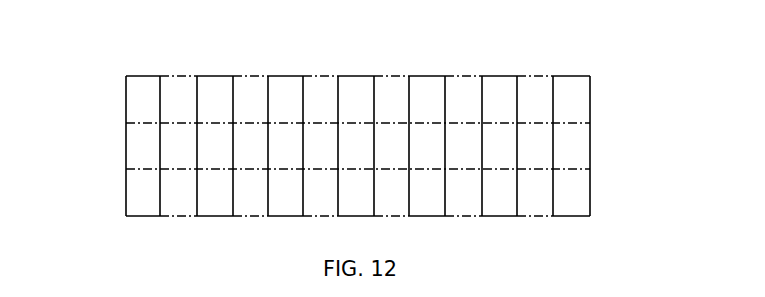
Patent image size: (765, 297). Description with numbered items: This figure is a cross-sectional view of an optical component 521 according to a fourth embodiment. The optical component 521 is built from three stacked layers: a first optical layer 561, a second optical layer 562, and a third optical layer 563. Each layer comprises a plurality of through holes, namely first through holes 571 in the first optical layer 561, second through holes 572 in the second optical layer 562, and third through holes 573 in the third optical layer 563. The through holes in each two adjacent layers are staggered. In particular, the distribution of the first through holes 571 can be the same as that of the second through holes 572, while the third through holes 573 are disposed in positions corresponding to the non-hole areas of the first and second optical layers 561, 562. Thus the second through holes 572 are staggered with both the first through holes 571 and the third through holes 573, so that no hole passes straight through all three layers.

The optical component 521 is at (358, 119).
The first optical layer 561 is at (590, 102).
The second optical layer 562 is at (590, 199).
The third optical layer 563 is at (590, 146).
The first through holes 571 is at (137, 98).
The second through holes 572 is at (137, 204).
The third through holes 573 is at (184, 157).